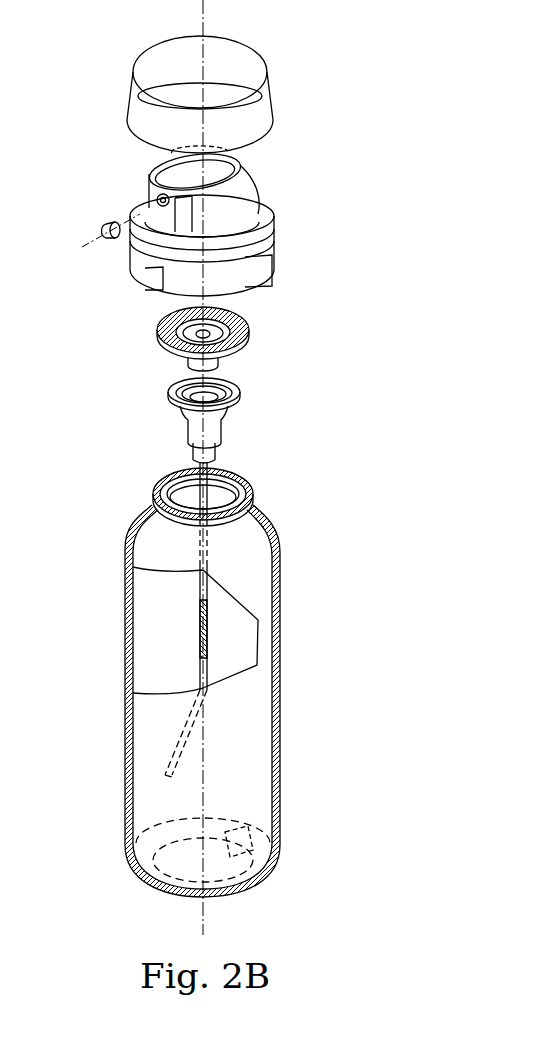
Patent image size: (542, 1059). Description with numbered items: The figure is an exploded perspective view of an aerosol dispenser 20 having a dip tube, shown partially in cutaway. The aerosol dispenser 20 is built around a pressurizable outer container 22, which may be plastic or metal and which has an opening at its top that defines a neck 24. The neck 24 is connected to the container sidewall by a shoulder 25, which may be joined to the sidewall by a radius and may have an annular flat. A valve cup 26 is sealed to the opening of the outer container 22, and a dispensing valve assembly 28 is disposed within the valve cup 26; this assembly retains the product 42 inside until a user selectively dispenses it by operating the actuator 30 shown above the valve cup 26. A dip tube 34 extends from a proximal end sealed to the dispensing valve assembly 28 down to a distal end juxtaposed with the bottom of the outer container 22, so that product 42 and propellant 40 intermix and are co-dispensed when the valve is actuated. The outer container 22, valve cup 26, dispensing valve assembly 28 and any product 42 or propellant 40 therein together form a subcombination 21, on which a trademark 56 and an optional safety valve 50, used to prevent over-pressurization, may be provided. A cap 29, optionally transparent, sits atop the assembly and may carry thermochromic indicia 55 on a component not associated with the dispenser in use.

The aerosol dispenser 20 is at (298, 648).
The subcombination 21 is at (133, 328).
The outer container 22 is at (143, 782).
The neck 24 is at (253, 476).
The shoulder 25 is at (270, 520).
The valve cup 26 is at (240, 385).
The dispensing valve assembly 28 is at (250, 314).
The cap 29 is at (242, 60).
The actuator 30 is at (97, 292).
The dip tube 34 is at (210, 600).
The propellant 40 is at (255, 768).
The product 42 is at (223, 793).
The safety valve 50 is at (270, 843).
The thermochromic indicia 55 is at (277, 217).
The trademark 56 is at (140, 290).